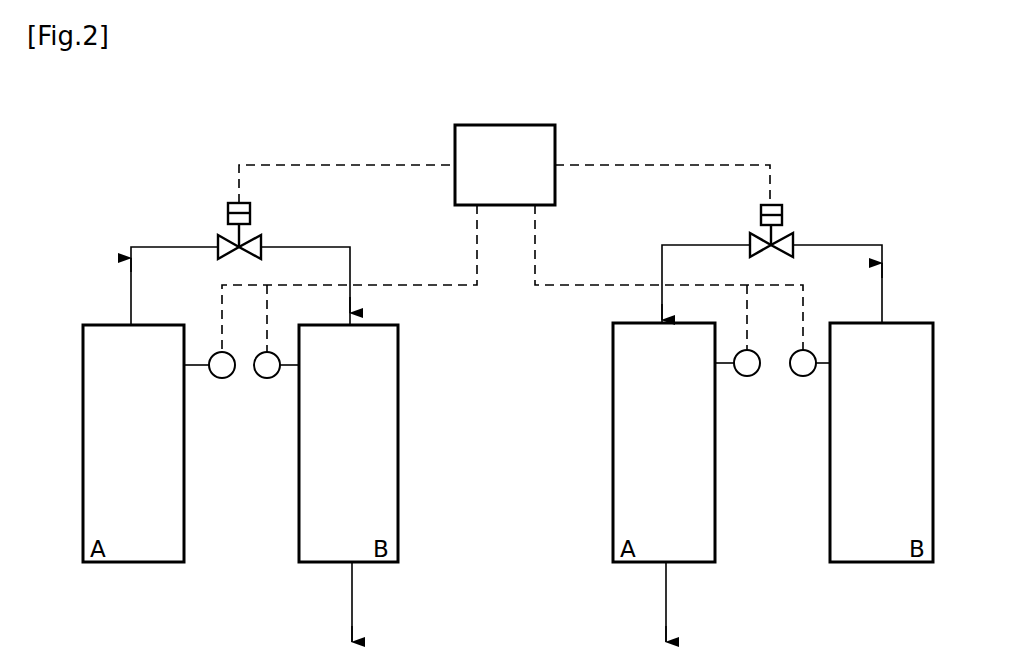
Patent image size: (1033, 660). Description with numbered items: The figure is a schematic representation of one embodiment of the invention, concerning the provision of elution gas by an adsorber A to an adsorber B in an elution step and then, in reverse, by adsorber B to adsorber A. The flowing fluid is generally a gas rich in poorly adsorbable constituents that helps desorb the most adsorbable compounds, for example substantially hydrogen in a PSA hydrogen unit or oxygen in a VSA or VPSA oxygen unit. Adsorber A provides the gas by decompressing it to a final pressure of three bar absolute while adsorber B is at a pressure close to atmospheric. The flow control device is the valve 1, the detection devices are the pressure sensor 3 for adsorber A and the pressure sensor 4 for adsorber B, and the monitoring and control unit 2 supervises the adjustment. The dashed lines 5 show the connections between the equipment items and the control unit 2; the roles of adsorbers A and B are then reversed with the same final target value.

The valve 1 is at (255, 223).
The monitoring and control unit 2 is at (535, 143).
The pressure sensor 3 is at (222, 378).
The pressure sensor 4 is at (267, 378).
The signal line 5 is at (300, 165).